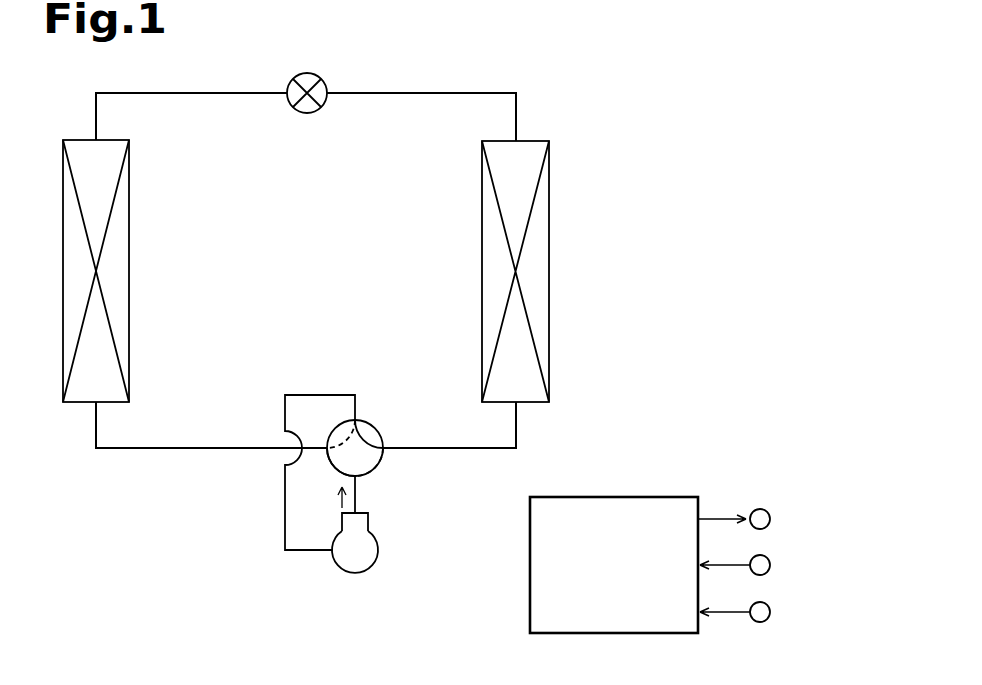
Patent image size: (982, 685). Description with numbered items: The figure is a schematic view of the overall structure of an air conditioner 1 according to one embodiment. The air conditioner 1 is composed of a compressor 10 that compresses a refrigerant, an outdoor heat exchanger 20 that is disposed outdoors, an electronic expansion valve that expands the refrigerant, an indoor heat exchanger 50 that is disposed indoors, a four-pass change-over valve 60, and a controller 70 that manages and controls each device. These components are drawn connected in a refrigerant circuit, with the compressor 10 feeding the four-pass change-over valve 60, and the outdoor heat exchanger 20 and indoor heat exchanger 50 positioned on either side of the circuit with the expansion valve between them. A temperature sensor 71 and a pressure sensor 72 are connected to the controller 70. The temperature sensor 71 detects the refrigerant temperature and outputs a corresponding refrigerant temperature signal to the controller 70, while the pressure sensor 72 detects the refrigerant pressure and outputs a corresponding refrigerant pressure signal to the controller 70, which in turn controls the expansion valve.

The air conditioner 1 is at (715, 117).
The compressor 10 is at (378, 550).
The outdoor heat exchanger 20 is at (130, 363).
The indoor heat exchanger 50 is at (481, 363).
The four-pass change-over valve 60 is at (377, 428).
The controller 70 is at (617, 497).
The temperature sensor 71 is at (770, 565).
The pressure sensor 72 is at (770, 612).